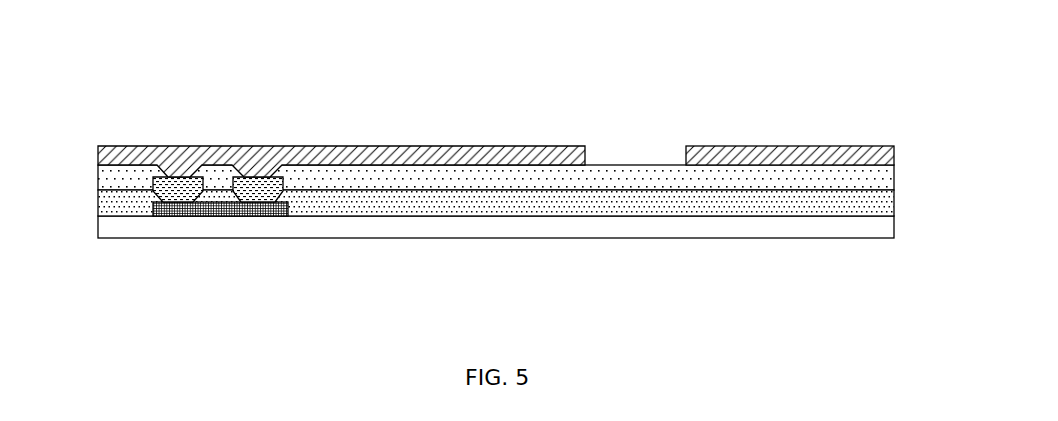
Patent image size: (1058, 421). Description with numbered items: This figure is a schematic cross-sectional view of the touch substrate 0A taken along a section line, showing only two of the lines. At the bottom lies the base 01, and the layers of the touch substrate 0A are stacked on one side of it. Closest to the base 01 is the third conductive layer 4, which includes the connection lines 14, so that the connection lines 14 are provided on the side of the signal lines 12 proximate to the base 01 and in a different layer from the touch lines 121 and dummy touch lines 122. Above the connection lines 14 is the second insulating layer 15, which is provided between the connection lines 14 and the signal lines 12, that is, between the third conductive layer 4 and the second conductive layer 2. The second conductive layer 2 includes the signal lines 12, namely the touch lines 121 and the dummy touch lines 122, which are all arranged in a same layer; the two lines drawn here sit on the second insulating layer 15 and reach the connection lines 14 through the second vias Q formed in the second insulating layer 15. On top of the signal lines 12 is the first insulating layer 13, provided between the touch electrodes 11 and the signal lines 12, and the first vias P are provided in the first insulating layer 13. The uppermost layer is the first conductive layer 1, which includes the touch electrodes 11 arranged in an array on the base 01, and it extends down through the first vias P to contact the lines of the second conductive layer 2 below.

The touch substrate 0A is at (835, 84).
The base 01 is at (692, 227).
The first conductive layer 1 is at (543, 95).
The touch electrodes 11 is at (470, 158).
The signal lines 12 is at (204, 81).
The touch lines 121 is at (233, 177).
The dummy touch lines 122 is at (166, 200).
The first insulating layer 13 is at (113, 170).
The connection lines 14 is at (152, 203).
The second insulating layer 15 is at (133, 200).
The second conductive layer 2 is at (175, 47).
The third conductive layer 4 is at (112, 83).
The first vias P is at (243, 179).
The second vias Q is at (166, 182).